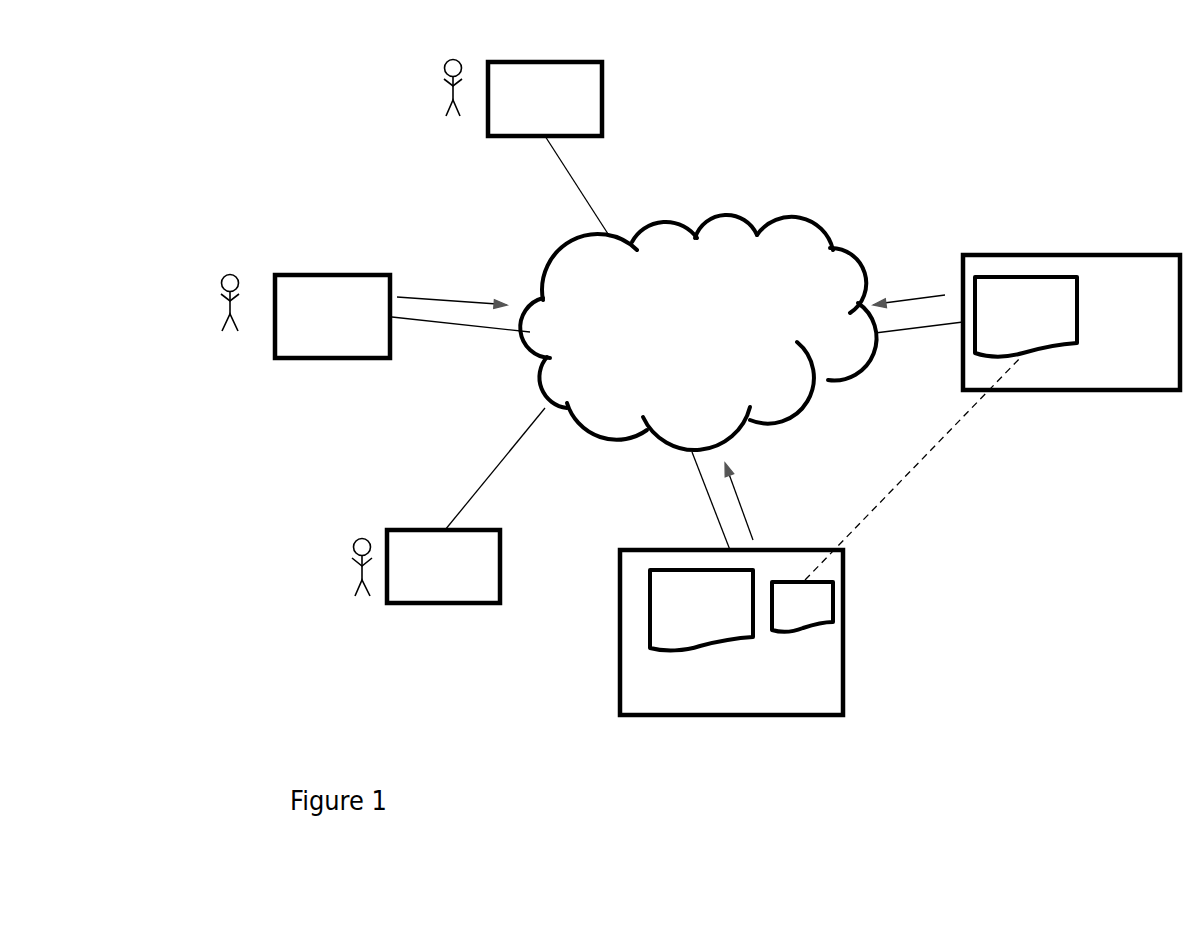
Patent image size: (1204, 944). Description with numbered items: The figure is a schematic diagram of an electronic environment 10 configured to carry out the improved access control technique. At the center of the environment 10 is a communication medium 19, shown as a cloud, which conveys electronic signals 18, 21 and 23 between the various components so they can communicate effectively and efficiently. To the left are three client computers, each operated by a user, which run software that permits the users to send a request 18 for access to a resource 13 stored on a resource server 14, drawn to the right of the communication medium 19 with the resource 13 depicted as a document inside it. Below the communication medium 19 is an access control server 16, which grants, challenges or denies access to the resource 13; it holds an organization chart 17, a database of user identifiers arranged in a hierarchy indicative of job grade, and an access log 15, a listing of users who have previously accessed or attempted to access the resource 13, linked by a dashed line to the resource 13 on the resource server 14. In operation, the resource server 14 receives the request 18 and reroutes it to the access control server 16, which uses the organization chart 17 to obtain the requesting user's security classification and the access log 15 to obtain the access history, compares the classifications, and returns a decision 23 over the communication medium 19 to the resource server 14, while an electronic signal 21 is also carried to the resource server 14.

The electronic environment 10 is at (275, 103).
The resource 13 is at (1023, 355).
The resource server 14 is at (1072, 255).
The access log 15 is at (802, 632).
The access control server 16 is at (845, 630).
The organization chart 17 is at (717, 643).
The request 18 is at (452, 289).
The communication medium 19 is at (695, 230).
The electronic signal 21 is at (909, 284).
The decision 23 is at (754, 501).